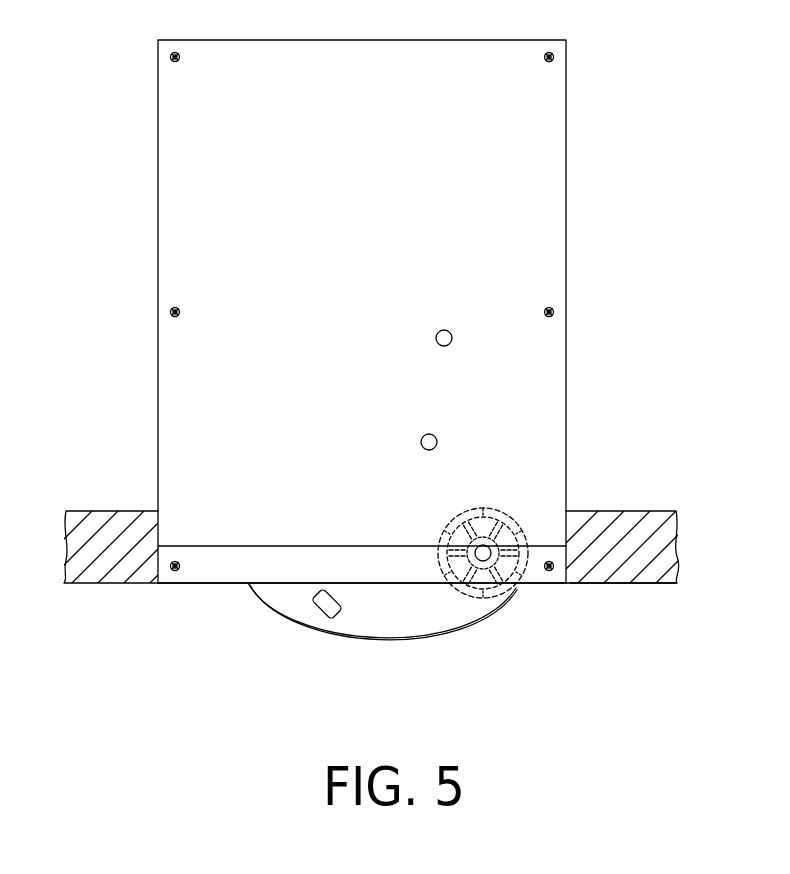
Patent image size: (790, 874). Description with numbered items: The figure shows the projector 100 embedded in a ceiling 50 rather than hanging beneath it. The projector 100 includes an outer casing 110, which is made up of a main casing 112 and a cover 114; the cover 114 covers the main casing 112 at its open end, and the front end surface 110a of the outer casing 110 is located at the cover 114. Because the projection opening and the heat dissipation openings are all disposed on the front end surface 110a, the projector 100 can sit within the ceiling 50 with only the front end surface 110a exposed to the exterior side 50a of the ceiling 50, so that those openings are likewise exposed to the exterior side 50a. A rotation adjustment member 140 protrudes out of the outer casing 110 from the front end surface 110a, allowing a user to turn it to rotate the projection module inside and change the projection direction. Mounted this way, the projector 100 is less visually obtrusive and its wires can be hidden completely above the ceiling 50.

The projector 100 is at (589, 143).
The outer casing 110 is at (640, 403).
The main casing 112 is at (548, 418).
The cover 114 is at (418, 556).
The front end surface 110a is at (220, 583).
The rotation adjustment member 140 is at (517, 586).
The ceiling 50 is at (608, 516).
The exterior side 50a is at (598, 583).